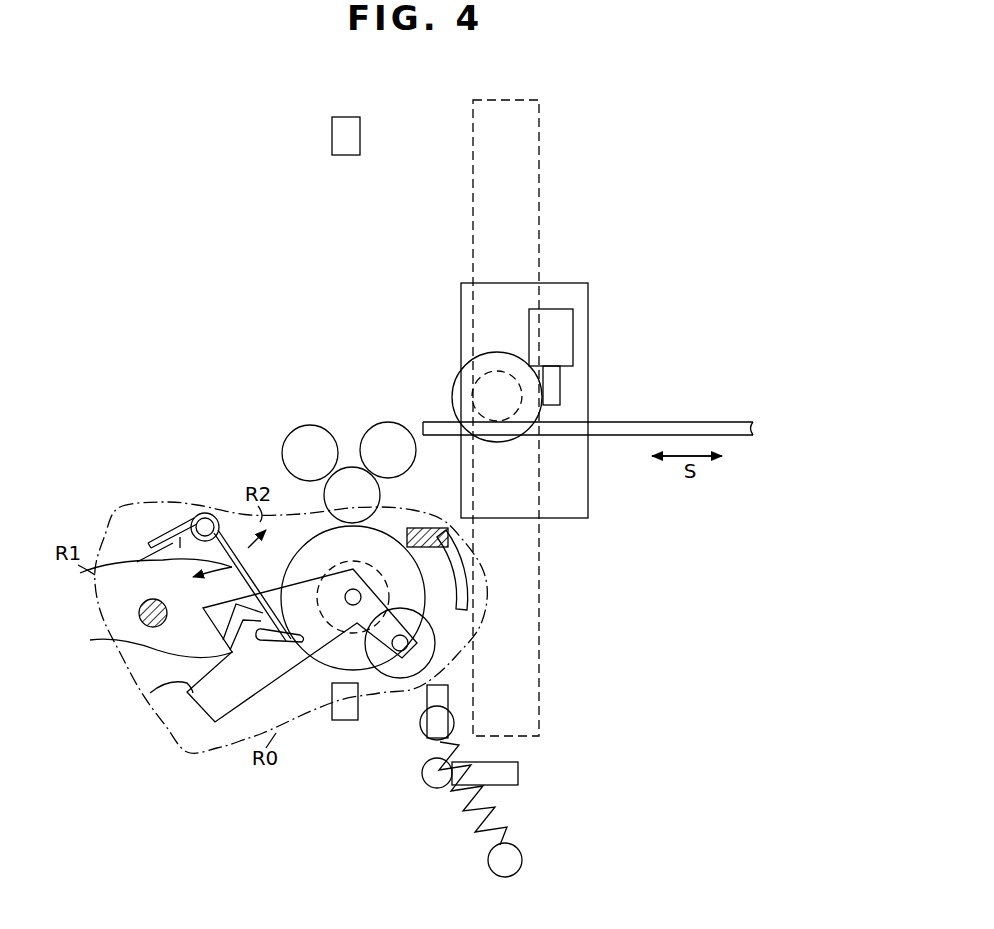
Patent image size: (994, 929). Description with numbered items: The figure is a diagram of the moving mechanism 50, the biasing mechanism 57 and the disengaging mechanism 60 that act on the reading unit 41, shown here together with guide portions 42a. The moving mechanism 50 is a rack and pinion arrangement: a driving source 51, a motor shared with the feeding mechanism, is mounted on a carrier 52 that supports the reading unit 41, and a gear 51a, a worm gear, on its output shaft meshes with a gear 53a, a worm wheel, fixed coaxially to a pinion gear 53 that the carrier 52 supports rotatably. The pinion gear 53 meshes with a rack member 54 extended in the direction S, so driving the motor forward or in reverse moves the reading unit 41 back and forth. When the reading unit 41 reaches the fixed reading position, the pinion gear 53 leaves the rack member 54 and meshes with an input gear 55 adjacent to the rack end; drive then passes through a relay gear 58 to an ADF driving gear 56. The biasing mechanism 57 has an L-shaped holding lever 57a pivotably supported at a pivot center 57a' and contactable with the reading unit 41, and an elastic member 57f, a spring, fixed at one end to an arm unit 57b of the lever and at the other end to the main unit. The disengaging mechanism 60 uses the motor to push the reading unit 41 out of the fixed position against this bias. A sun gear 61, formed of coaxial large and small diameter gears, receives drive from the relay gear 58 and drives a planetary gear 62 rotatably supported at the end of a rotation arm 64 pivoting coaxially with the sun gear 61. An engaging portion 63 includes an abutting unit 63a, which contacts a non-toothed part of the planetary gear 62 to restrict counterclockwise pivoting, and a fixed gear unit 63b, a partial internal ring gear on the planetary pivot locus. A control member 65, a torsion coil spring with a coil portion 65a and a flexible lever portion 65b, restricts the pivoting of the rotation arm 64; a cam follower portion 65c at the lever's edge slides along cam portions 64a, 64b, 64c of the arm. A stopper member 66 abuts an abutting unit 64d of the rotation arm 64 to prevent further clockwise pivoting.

The reading unit 41 is at (473, 122).
The guide portions 42a is at (346, 155).
The moving mechanism 50 is at (755, 318).
The driving source 51 is at (573, 340).
The gear 51a is at (560, 385).
The carrier 52 is at (588, 500).
The pinion gear 53 is at (465, 363).
The gear 53a is at (492, 352).
The rack member 54 is at (724, 422).
The input gear 55 is at (388, 422).
The ADF driving gear 56 is at (310, 425).
The biasing mechanism 57 is at (548, 857).
The holding lever 57a is at (521, 780).
The pivot center 57a' is at (433, 799).
The arm unit 57b is at (423, 750).
The elastic member 57f is at (510, 832).
The relay gear 58 is at (352, 468).
The disengaging mechanism 60 is at (120, 664).
The sun gear 61 is at (410, 597).
The planetary gear 62 is at (415, 660).
The engaging portion 63 is at (497, 605).
The abutting unit 63a is at (430, 528).
The fixed gear unit 63b is at (484, 565).
The rotation arm 64 is at (172, 720).
The cam portion 64a is at (252, 627).
The cam portion 64b is at (118, 640).
The cam portion 64c is at (233, 723).
The abutting unit 64d is at (150, 693).
The control member 65 is at (244, 443).
The coil portion 65a is at (170, 515).
The lever portion 65b is at (233, 515).
The cam follower portion 65c is at (292, 655).
The stopper member 66 is at (140, 612).